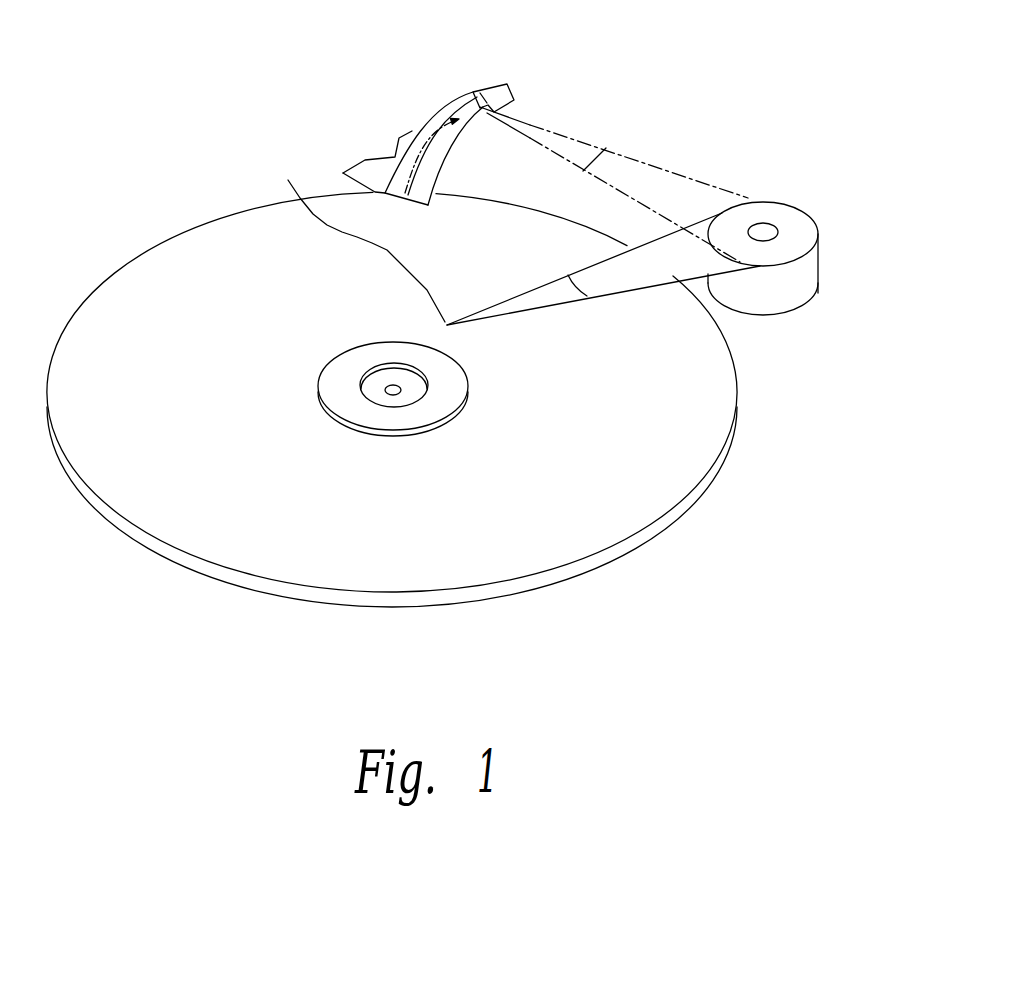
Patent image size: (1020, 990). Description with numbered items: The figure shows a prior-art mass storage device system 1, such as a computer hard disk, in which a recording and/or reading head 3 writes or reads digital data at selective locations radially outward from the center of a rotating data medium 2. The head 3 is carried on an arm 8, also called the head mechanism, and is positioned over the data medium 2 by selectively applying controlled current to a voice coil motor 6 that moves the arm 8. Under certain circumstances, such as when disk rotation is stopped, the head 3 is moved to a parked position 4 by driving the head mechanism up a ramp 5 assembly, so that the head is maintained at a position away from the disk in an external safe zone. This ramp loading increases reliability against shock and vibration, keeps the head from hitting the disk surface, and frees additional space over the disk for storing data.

The mass storage device system 1 is at (830, 408).
The rotating data medium 2 is at (168, 254).
The recording and/or reading head 3 is at (288, 180).
The parked position 4 is at (487, 92).
The ramp assembly 5 is at (412, 131).
The voice coil motor 6 is at (805, 222).
The arm 8 is at (618, 282).